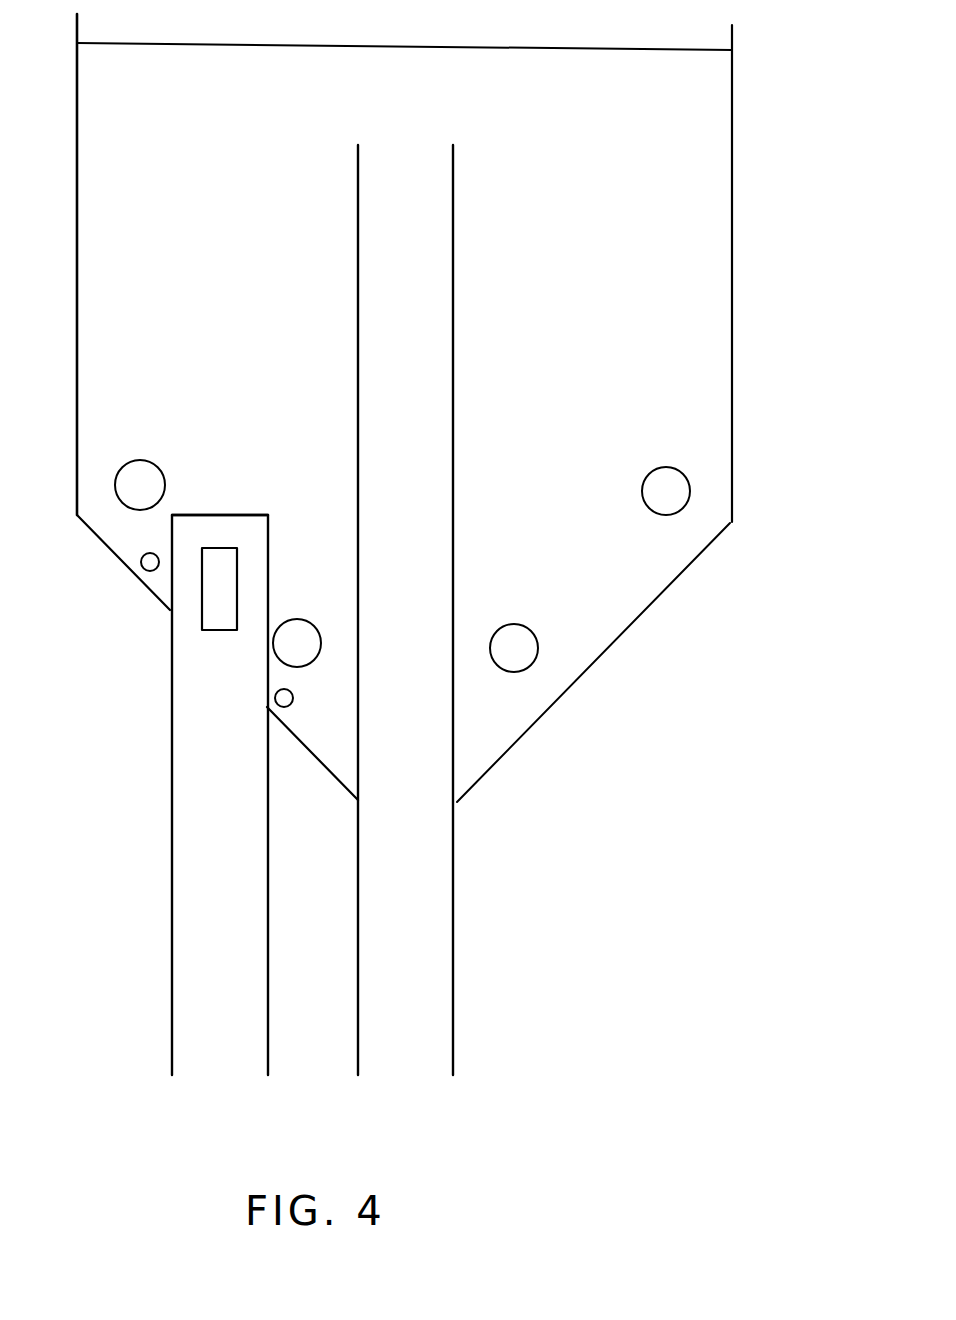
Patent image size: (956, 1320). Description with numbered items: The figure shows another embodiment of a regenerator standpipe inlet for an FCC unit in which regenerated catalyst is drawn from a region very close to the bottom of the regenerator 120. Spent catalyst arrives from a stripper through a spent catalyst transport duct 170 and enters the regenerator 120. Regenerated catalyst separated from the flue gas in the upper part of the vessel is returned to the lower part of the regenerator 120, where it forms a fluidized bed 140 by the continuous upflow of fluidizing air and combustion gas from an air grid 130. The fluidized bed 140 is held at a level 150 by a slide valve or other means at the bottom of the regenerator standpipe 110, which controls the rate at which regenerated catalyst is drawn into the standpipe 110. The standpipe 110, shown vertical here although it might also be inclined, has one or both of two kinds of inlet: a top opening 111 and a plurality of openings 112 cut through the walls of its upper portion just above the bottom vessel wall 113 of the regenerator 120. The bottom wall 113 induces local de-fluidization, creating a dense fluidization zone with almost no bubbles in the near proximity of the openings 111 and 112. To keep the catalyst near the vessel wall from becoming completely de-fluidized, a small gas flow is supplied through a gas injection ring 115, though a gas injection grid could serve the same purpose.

The regenerator standpipe 110 is at (247, 835).
The top opening 111 is at (244, 515).
The openings 112 is at (220, 602).
The bottom vessel wall 113 is at (96, 532).
The gas injection ring 115 is at (290, 690).
The regenerator 120 is at (732, 333).
The air grid 130 is at (693, 447).
The fluidized bed 140 is at (600, 256).
The level 150 is at (537, 50).
The spent catalyst transport duct 170 is at (428, 342).